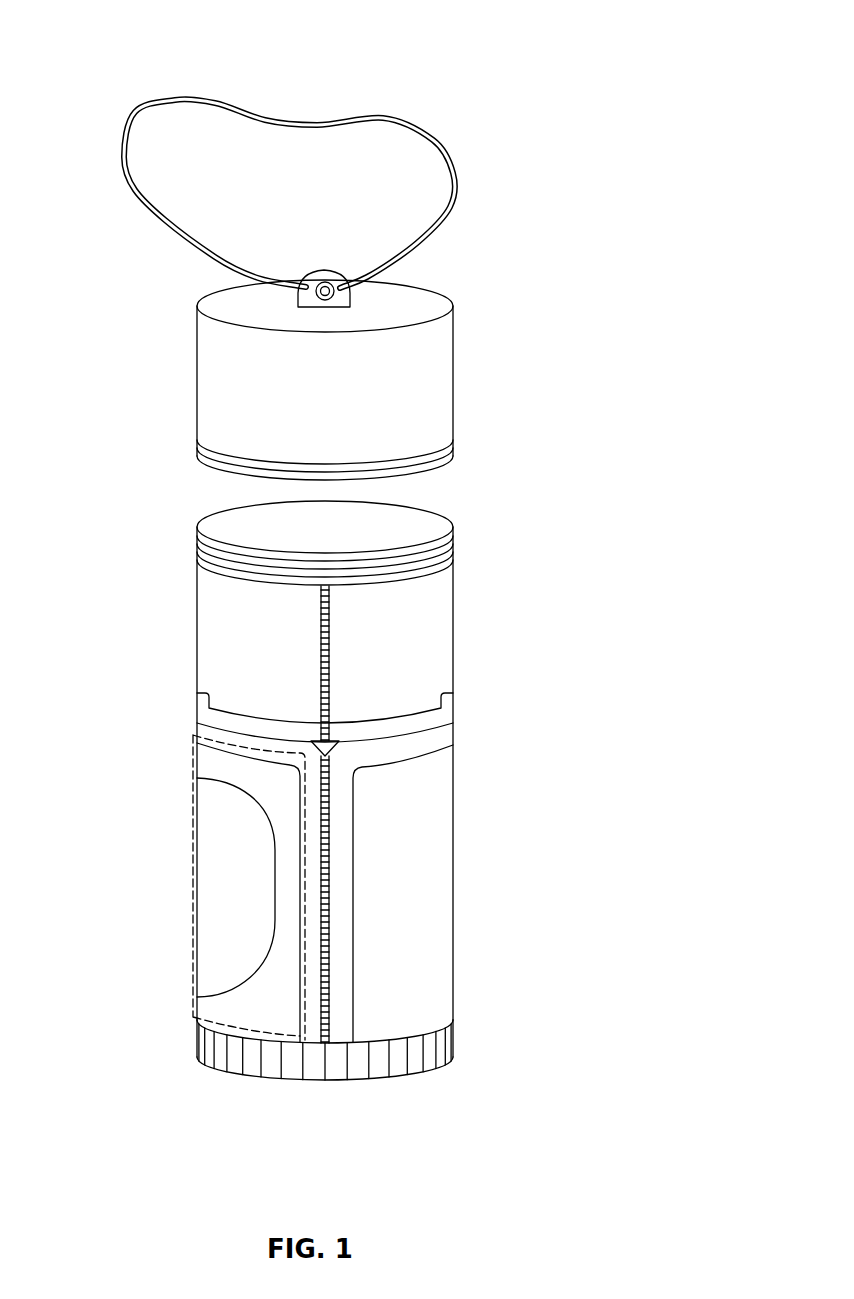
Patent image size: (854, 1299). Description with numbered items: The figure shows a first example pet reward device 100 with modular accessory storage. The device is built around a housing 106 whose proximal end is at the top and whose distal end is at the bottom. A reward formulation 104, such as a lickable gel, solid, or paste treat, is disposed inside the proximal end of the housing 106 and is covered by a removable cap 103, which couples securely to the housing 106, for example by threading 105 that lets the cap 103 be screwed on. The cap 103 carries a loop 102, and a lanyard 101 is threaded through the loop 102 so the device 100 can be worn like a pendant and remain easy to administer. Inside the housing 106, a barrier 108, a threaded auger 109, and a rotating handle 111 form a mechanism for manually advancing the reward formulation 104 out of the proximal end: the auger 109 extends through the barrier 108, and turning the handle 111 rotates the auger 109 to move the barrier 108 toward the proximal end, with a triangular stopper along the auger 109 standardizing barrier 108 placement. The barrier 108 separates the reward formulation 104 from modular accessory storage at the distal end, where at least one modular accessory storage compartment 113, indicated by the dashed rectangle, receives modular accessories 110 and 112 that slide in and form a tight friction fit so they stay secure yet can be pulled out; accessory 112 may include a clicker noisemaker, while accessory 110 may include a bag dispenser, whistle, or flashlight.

The pet reward device 100 is at (432, 58).
The lanyard 101 is at (447, 150).
The loop 102 is at (340, 297).
The removable cap 103 is at (420, 398).
The reward formulation 104 is at (413, 527).
The threading 105 is at (415, 563).
The housing 106 is at (495, 628).
The barrier 108 is at (427, 718).
The threaded auger 109 is at (330, 790).
The modular accessory 110 is at (390, 1012).
The rotating handle 111 is at (455, 1038).
The modular accessory 112 is at (217, 938).
The modular accessory storage compartment 113 is at (240, 1032).